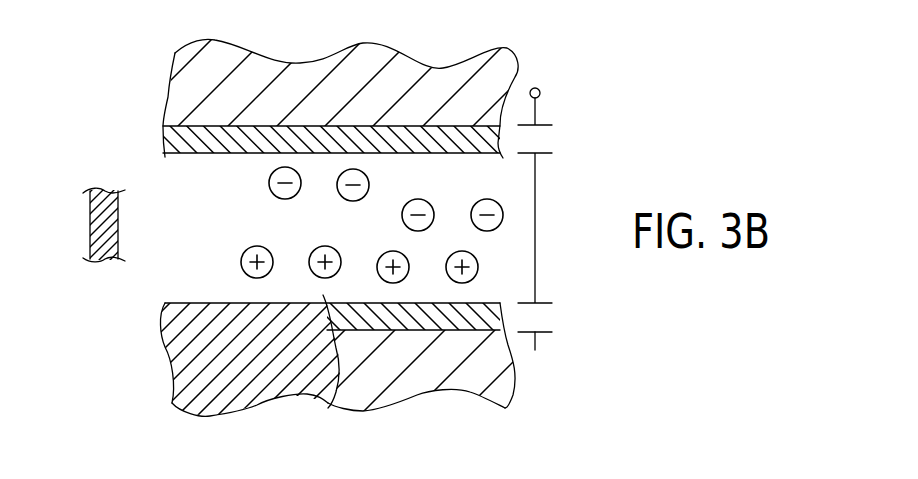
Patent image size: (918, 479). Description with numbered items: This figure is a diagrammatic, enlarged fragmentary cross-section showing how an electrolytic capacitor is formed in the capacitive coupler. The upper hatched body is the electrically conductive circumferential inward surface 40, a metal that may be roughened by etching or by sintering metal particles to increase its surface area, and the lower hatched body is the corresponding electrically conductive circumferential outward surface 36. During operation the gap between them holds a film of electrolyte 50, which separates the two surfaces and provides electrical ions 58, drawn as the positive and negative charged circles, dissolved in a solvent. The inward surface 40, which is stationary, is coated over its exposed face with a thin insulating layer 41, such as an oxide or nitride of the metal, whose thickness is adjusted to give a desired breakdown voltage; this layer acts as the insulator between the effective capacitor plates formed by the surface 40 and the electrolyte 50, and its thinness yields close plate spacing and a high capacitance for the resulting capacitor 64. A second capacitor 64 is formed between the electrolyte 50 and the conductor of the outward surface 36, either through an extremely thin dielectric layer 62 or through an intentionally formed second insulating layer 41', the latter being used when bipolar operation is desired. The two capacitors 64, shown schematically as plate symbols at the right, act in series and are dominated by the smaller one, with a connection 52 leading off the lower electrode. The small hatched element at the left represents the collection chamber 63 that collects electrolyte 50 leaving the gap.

The circumferential outward surface 36 is at (278, 397).
The circumferential inward surface 40 is at (445, 80).
The insulating layer 41 is at (304, 134).
The second insulating layer 41' is at (420, 288).
The electrolyte 50 is at (202, 213).
The electrical connection 52 is at (535, 350).
The electrical ions 58 is at (263, 247).
The dielectric layer 62 is at (197, 303).
The collection chamber 63 is at (89, 222).
The capacitor 64 is at (547, 125).